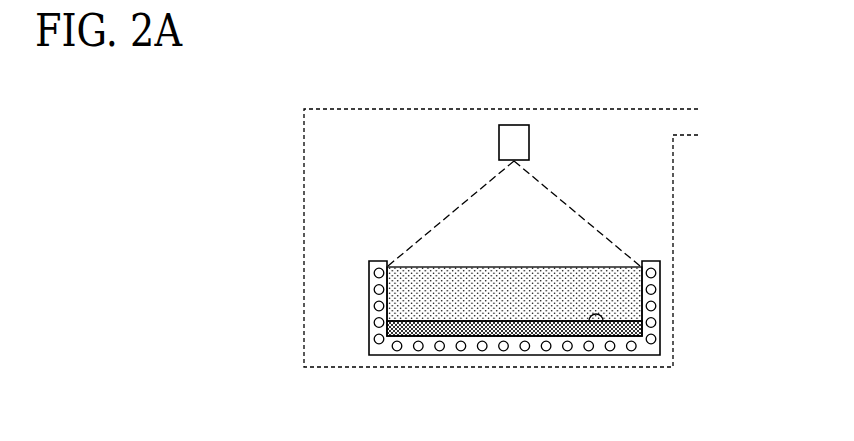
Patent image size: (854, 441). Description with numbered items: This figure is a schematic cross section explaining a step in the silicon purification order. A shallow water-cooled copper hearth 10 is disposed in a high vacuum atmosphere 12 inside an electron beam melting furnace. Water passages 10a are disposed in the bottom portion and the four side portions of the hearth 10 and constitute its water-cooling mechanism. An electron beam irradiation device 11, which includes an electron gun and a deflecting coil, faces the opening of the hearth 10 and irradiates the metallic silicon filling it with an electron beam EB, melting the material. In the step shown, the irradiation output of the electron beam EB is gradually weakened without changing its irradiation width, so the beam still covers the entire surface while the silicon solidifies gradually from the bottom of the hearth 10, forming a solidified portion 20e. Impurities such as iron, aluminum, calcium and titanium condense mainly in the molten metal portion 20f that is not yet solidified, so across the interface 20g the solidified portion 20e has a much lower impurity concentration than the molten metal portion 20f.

The water-cooled copper hearth 10 is at (566, 320).
The water passages 10a is at (420, 351).
The electron beam irradiation device 11 is at (529, 143).
The high vacuum atmosphere 12 is at (662, 185).
The solidified portion 20e is at (640, 330).
The molten metal portion 20f is at (605, 278).
The interface 20g is at (604, 322).
The electron beam EB is at (577, 211).